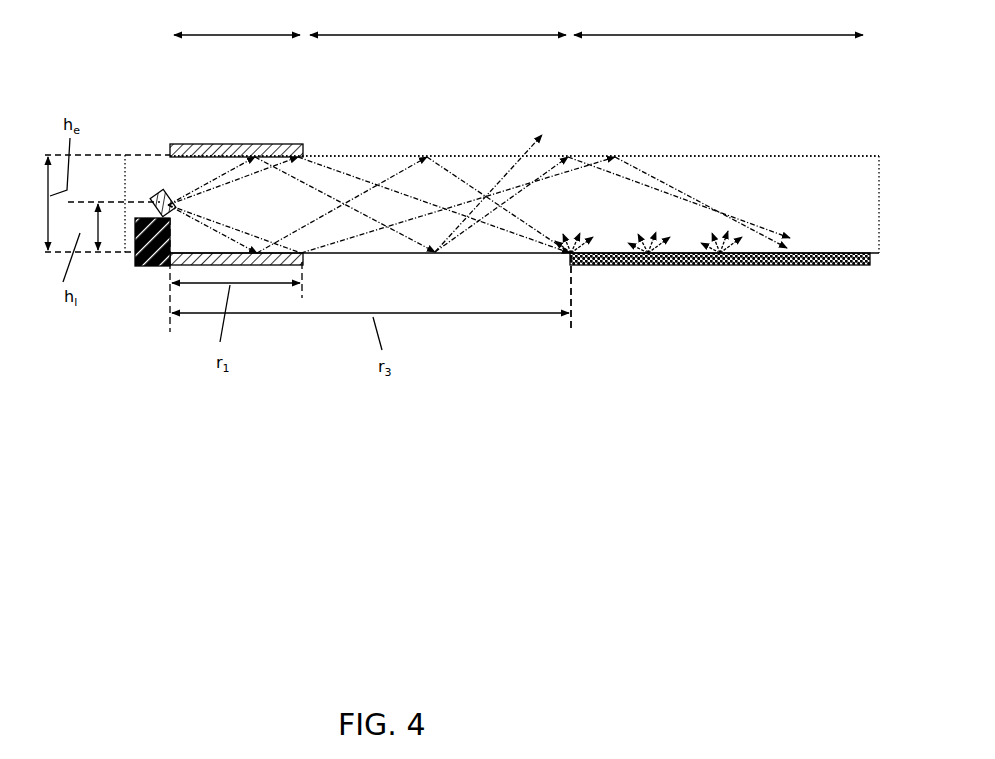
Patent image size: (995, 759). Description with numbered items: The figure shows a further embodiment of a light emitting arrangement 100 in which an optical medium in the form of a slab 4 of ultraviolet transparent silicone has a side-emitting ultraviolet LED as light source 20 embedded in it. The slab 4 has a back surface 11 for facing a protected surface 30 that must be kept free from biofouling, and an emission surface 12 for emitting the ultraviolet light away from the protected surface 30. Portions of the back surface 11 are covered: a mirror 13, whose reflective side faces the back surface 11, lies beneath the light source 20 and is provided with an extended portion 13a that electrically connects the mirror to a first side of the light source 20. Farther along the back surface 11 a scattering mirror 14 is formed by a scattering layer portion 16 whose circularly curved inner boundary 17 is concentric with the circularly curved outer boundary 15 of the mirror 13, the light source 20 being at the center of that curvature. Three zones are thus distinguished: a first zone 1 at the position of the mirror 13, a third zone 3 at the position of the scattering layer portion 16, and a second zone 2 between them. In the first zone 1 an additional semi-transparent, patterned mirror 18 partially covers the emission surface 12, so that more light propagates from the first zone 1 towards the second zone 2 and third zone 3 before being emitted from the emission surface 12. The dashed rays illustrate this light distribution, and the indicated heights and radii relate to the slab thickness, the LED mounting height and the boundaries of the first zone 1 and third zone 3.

The first zone 1 is at (237, 20).
The second zone 2 is at (438, 20).
The third zone 3 is at (718, 20).
The slab 4 is at (803, 195).
The back surface 11 is at (417, 255).
The emission surface 12 is at (648, 155).
The mirror 13 is at (205, 265).
The extended portion 13a is at (153, 266).
The scattering mirror 14 is at (675, 266).
The outer boundary 15 is at (305, 259).
The scattering layer portion 16 is at (720, 259).
The inner boundary 17 is at (567, 256).
The additional mirror 18 is at (216, 143).
The light source 20 is at (162, 192).
The protected surface 30 is at (593, 292).
The light emitting arrangement 100 is at (750, 128).